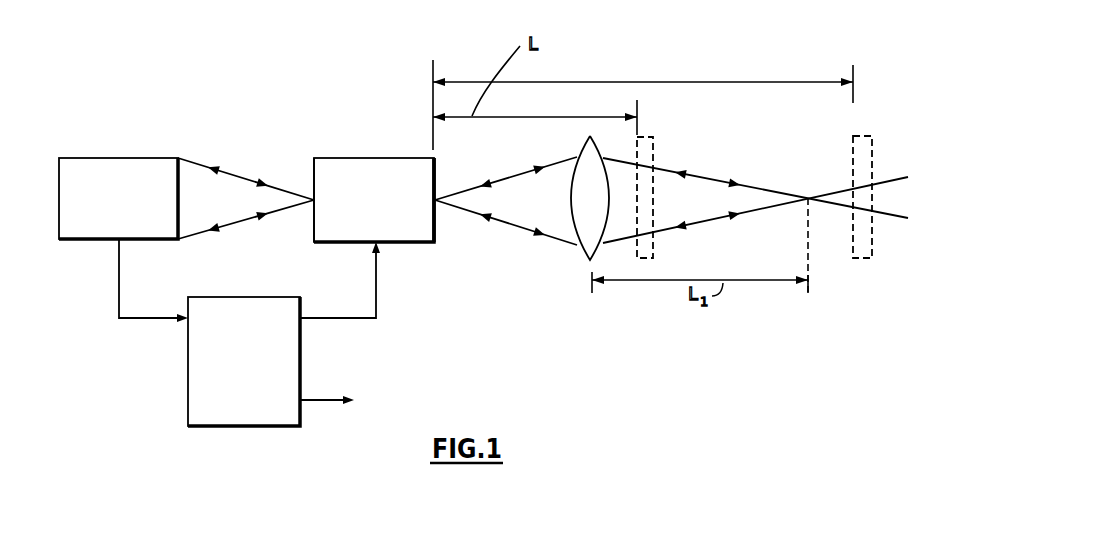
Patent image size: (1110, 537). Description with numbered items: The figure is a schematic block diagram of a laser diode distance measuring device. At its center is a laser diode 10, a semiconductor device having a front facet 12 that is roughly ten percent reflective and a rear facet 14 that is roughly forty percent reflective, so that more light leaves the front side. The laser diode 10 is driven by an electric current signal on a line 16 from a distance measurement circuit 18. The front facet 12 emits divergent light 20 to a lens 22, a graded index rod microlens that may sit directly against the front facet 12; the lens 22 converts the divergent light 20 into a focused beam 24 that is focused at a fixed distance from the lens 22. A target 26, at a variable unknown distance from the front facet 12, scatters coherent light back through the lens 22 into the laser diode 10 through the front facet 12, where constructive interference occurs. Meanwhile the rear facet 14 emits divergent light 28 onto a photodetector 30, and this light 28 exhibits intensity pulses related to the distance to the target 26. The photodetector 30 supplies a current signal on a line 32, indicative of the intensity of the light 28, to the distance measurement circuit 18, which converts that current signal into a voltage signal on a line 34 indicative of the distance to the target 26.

The laser diode 10 is at (354, 158).
The front facet 12 is at (432, 167).
The rear facet 14 is at (317, 170).
The line 16 is at (376, 289).
The distance measurement circuit 18 is at (188, 398).
The divergent light 20 is at (522, 217).
The lens 22 is at (588, 233).
The focused beam 24 is at (745, 201).
The target 26 is at (862, 257).
The divergent light 28 is at (239, 160).
The photodetector 30 is at (107, 157).
The line 32 is at (119, 287).
The line 34 is at (314, 402).